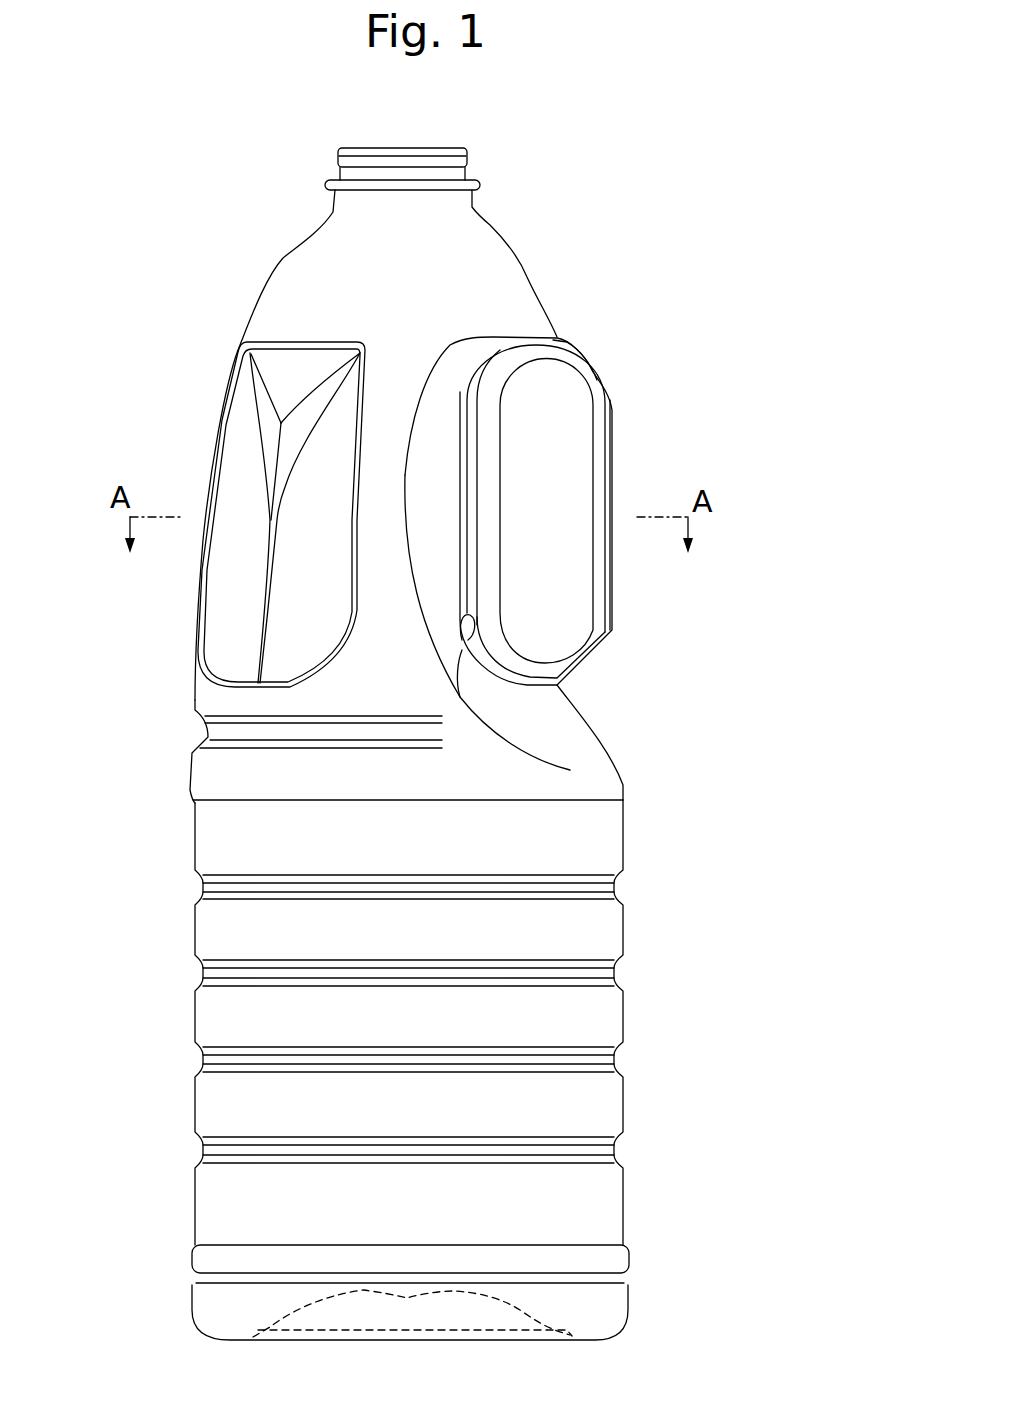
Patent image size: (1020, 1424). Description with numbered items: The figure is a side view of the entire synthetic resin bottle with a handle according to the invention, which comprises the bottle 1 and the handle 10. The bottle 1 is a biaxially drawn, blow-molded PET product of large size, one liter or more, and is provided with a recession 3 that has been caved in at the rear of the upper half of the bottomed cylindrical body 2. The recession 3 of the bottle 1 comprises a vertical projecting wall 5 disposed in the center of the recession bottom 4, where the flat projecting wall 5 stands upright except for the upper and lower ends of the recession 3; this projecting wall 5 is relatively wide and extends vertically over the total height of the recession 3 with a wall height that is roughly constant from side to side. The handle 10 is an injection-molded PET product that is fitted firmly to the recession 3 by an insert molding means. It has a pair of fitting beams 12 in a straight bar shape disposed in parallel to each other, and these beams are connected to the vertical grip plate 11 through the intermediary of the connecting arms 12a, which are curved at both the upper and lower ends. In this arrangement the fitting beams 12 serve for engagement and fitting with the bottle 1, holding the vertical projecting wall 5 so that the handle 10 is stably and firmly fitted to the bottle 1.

The bottle 1 is at (266, 263).
The bottomed cylindrical body 2 is at (622, 830).
The recession 3 is at (522, 440).
The recession bottom 4 is at (470, 643).
The vertical projecting wall 5 is at (495, 465).
The handle 10 is at (632, 390).
The grip plate 11 is at (613, 573).
The fitting beams 12 is at (470, 482).
The connecting arms 12a is at (578, 367).